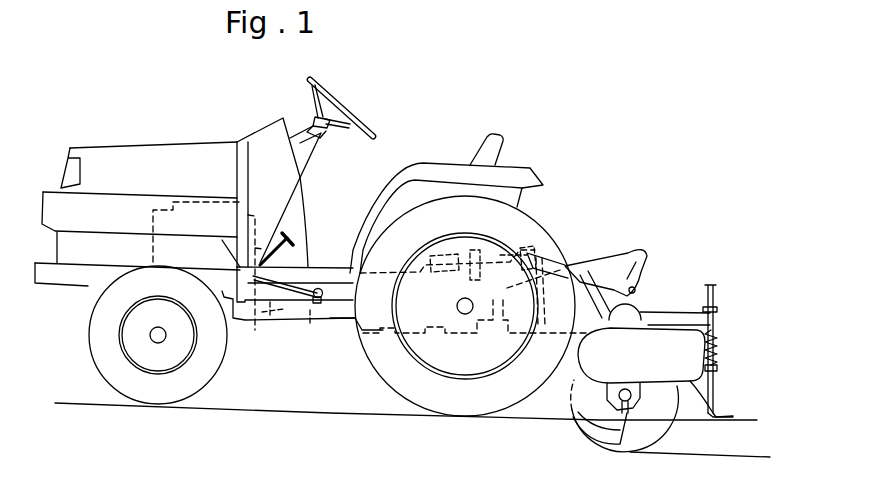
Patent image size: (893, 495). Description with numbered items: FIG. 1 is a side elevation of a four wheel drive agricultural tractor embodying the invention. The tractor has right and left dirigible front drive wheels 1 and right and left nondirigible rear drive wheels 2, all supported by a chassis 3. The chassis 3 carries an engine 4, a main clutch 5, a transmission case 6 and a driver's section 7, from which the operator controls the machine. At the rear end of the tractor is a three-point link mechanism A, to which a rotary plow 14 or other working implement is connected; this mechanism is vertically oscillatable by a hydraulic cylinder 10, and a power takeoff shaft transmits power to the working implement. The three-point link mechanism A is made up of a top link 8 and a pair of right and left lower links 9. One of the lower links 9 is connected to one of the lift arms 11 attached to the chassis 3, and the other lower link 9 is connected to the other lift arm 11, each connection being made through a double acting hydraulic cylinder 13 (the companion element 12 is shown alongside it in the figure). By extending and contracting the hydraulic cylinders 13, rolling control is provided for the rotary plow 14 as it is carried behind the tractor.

The front drive wheels 1 is at (173, 397).
The rear drive wheels 2 is at (462, 405).
The chassis 3 is at (311, 305).
The engine 4 is at (190, 200).
The main clutch 5 is at (273, 312).
The transmission case 6 is at (392, 333).
The driver's section 7 is at (383, 110).
The top link 8 is at (563, 243).
The lower links 9 is at (536, 333).
The hydraulic cylinder 10 is at (447, 273).
The lift arms 11 is at (520, 250).
The hitch arm 12 is at (577, 267).
The double acting hydraulic cylinders 13 is at (595, 294).
The rotary plow 14 is at (680, 284).
The three-point link mechanism A is at (586, 235).